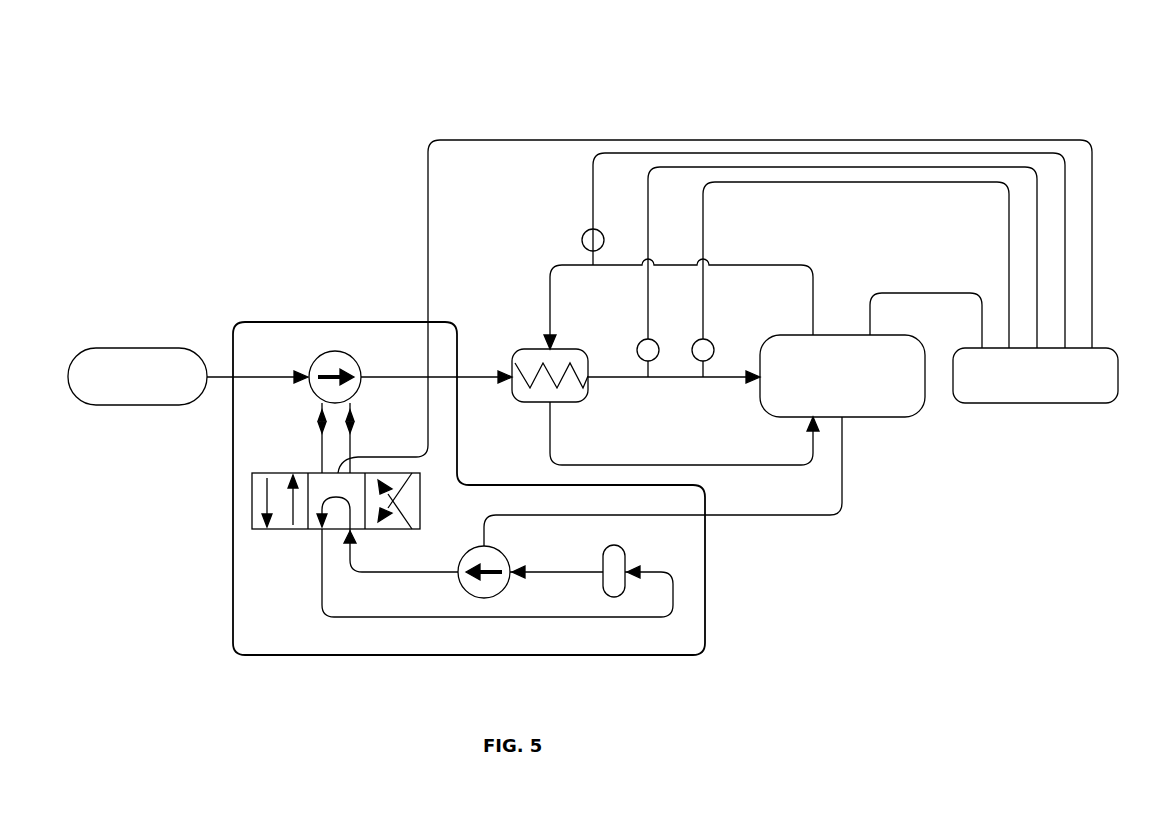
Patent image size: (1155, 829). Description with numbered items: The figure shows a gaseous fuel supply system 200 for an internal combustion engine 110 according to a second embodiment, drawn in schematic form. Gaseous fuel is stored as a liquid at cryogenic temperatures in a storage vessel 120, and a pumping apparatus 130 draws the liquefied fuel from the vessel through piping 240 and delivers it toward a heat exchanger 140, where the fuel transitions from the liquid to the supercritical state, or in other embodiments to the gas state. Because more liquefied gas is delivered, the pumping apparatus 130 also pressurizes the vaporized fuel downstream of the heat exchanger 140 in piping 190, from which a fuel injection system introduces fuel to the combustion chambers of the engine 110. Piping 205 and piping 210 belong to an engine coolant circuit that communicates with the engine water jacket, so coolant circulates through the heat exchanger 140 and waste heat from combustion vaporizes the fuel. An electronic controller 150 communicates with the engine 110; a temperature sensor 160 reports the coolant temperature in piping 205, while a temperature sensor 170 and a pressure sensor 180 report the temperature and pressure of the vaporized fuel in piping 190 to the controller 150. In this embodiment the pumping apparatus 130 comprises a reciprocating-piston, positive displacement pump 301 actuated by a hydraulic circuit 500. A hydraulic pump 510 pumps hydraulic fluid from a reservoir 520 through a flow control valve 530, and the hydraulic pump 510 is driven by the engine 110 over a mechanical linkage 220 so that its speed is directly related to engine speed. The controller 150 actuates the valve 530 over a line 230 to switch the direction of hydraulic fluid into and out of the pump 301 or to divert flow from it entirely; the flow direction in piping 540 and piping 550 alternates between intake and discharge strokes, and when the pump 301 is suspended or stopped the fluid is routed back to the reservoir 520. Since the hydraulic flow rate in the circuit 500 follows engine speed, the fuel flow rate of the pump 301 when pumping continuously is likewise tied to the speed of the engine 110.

The internal combustion engine 110 is at (870, 418).
The storage vessel 120 is at (130, 348).
The pumping apparatus 130 is at (343, 320).
The heat exchanger 140 is at (514, 348).
The electronic controller 150 is at (1037, 404).
The temperature sensor 160 is at (583, 231).
The temperature sensor 170 is at (636, 346).
The pressure sensor 180 is at (713, 346).
The piping 190 is at (672, 378).
The gaseous fuel supply system 200 is at (598, 116).
The piping 205 is at (785, 262).
The piping 210 is at (654, 465).
The mechanical linkage 220 is at (748, 516).
The line 230 is at (474, 138).
The piping 240 is at (223, 379).
The reciprocating-piston positive displacement pump 301 is at (312, 364).
The hydraulic circuit 500 is at (276, 600).
The hydraulic pump 510 is at (467, 550).
The reservoir 520 is at (602, 562).
The flow control valve 530 is at (275, 530).
The piping 540 is at (320, 450).
The piping 550 is at (352, 452).